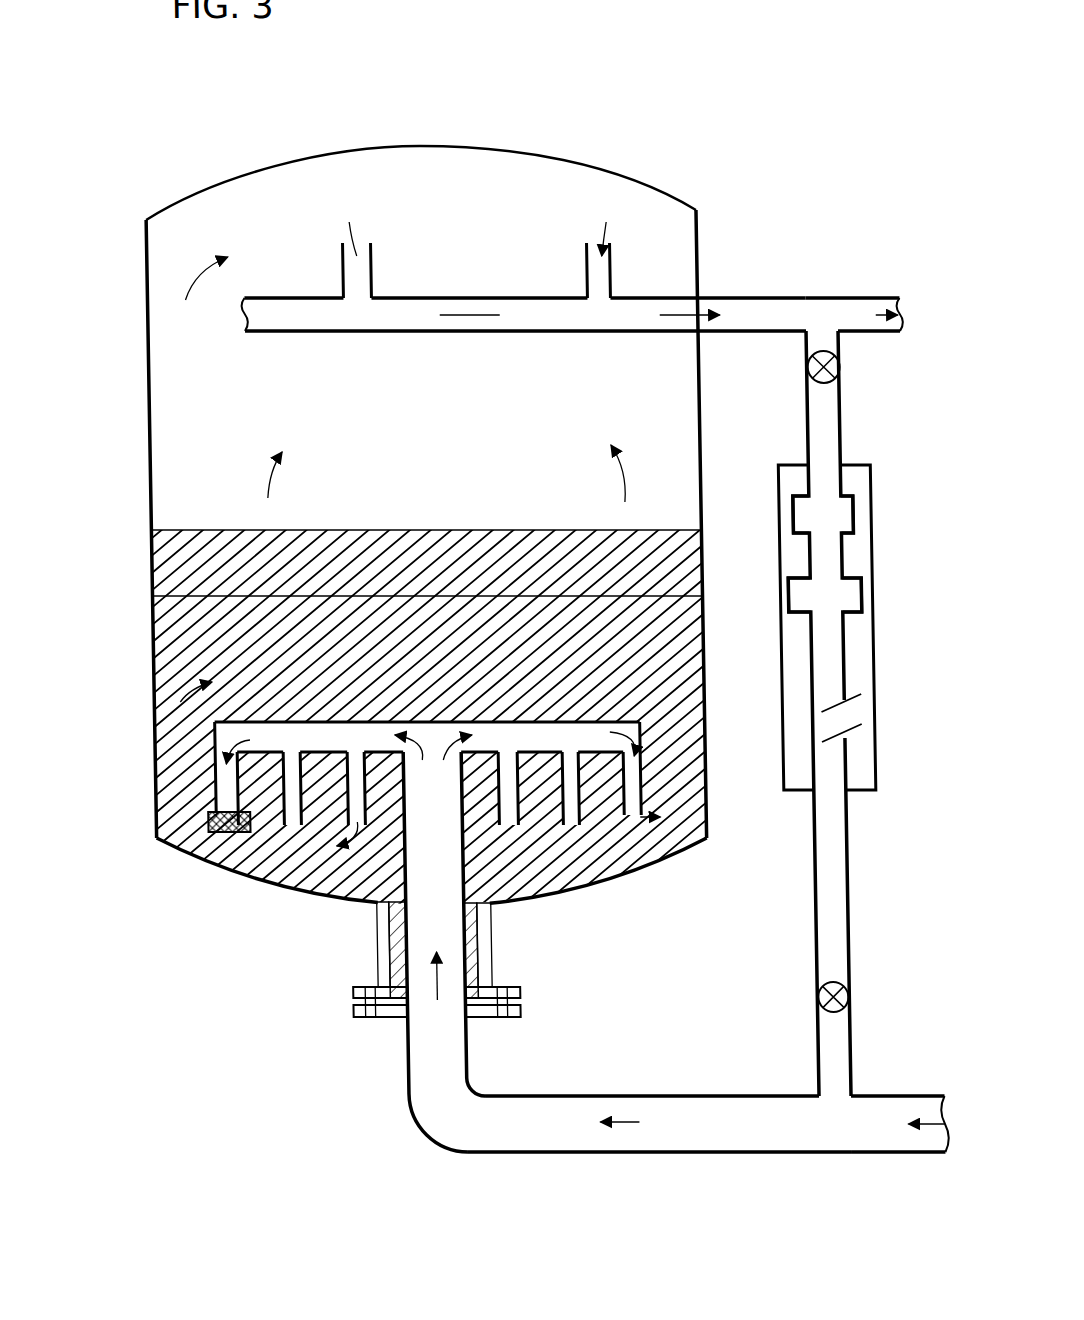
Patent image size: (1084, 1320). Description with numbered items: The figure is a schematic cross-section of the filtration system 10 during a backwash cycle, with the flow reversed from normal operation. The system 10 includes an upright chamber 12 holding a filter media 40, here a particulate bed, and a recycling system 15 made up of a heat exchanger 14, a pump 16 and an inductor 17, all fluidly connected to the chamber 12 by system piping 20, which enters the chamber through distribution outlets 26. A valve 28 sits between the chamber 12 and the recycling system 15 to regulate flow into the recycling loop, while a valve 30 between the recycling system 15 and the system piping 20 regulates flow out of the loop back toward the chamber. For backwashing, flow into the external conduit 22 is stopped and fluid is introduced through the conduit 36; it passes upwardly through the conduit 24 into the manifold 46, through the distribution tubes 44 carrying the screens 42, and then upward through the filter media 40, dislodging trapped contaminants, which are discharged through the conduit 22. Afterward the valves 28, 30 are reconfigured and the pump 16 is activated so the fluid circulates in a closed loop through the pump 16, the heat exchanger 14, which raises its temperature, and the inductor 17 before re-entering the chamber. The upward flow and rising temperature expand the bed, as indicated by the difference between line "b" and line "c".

The filtration system 10 is at (612, 147).
The chamber 12 is at (148, 367).
The heat exchanger 14 is at (838, 525).
The recycling system 15 is at (870, 547).
The pump 16 is at (834, 603).
The inductor 17 is at (848, 736).
The system piping 20 is at (729, 296).
The conduit 22 is at (889, 296).
The conduit 24 is at (439, 812).
The distribution outlets 26 is at (374, 252).
The valve 28 is at (839, 366).
The valve 30 is at (837, 995).
The conduit 36 is at (916, 1154).
The filter media 40 is at (173, 648).
The screens 42 is at (215, 833).
The distribution tubes 44 is at (628, 812).
The manifold 46 is at (633, 716).
The line "c" c is at (148, 530).
The line "b" b is at (148, 597).